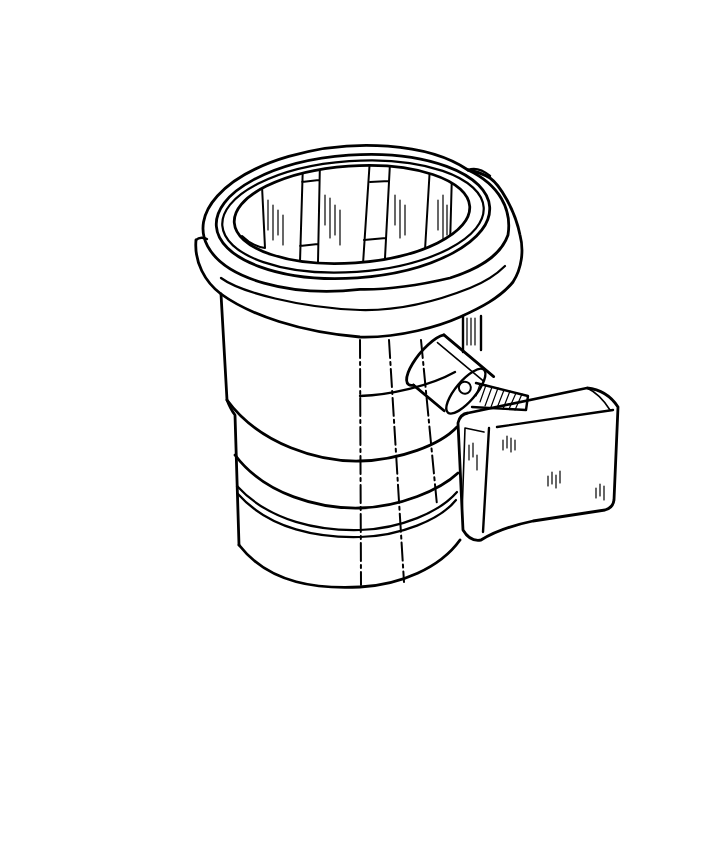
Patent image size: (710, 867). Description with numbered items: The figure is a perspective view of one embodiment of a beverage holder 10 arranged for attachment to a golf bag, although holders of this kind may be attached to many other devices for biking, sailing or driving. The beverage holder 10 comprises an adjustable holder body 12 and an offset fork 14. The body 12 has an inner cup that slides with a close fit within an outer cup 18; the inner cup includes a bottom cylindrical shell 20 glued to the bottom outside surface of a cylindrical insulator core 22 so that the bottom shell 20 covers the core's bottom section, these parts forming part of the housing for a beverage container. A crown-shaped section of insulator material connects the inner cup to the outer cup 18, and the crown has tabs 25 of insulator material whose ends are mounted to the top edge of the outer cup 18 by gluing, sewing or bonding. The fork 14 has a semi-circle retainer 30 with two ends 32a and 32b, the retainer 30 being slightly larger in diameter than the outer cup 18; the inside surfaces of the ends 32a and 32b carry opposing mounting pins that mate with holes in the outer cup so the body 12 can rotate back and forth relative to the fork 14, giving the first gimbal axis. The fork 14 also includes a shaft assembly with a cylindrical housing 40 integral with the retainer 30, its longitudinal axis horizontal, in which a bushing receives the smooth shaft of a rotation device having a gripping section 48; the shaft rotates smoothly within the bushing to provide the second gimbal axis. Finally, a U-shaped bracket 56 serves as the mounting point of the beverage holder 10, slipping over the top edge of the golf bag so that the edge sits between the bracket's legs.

The beverage holder 10 is at (251, 82).
The adjustable holder body 12 is at (205, 330).
The offset fork 14 is at (540, 246).
The outer cup 18 is at (243, 380).
The bottom cylindrical shell 20 is at (263, 545).
The cylindrical insulator core 22 is at (253, 457).
The tabs 25 is at (350, 175).
The semi-circle retainer 30 is at (512, 287).
The end of retainer 32a is at (482, 170).
The end of retainer 32b is at (200, 243).
The cylindrical housing 40 is at (360, 396).
The gripping section 48 is at (520, 383).
The U-shaped bracket 56 is at (620, 455).